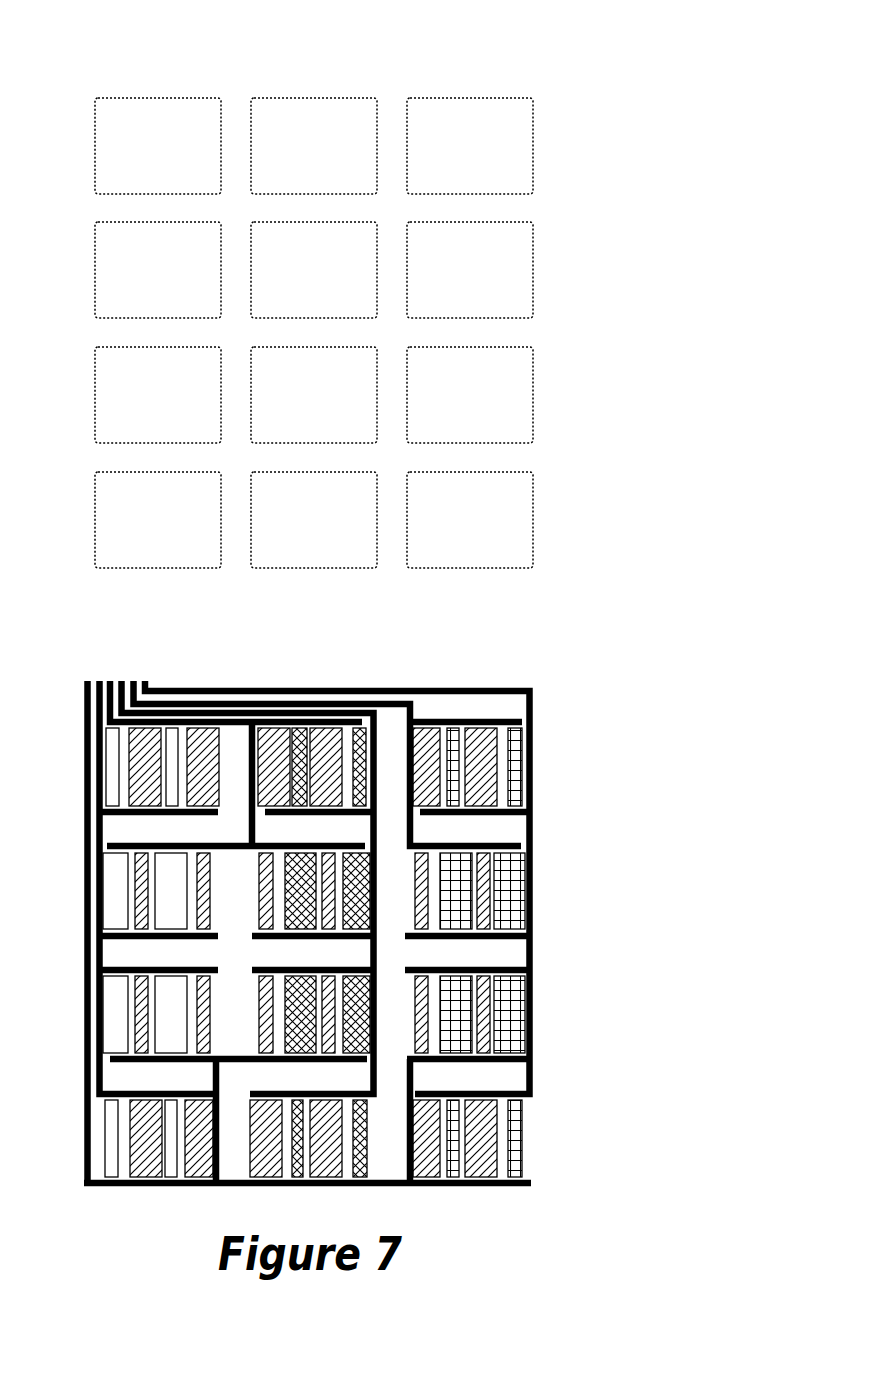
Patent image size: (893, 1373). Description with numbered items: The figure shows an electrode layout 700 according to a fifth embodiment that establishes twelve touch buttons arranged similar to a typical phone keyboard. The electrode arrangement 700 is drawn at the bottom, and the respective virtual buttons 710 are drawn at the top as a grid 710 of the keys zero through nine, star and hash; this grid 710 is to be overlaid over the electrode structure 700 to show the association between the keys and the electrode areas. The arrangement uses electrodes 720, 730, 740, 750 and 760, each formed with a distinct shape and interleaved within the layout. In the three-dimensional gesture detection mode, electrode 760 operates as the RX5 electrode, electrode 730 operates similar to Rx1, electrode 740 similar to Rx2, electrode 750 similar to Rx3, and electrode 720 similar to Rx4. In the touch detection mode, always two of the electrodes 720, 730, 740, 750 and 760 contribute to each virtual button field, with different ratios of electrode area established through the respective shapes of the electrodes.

The electrode layout 700 is at (142, 652).
The virtual buttons grid 710 is at (183, 72).
The electrode 720 is at (112, 795).
The electrode 730 is at (497, 755).
The electrode 740 is at (500, 893).
The electrode 750 is at (148, 1152).
The electrode 760 is at (368, 1157).